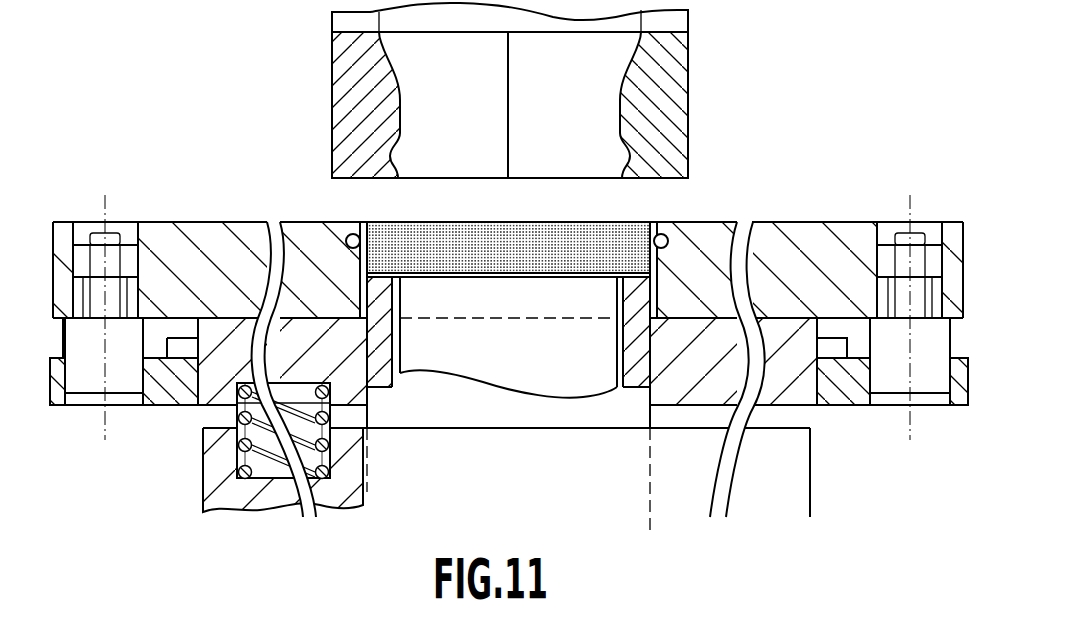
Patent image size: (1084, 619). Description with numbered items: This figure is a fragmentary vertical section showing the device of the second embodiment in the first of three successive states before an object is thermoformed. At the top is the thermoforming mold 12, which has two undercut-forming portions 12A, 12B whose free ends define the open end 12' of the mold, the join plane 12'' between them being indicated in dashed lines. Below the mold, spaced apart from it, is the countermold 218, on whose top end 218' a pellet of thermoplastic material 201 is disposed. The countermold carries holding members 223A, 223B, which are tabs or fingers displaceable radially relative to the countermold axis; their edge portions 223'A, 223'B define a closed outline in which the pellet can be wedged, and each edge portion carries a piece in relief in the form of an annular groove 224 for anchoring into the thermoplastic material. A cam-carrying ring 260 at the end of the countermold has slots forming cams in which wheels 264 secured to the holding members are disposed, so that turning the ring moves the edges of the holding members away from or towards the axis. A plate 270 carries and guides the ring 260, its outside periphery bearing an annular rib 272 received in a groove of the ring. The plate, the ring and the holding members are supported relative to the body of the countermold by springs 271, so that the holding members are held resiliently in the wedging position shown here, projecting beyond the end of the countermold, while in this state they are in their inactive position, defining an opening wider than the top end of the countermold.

The thermoforming mold 12 is at (556, 90).
The undercut-forming portion 12A is at (471, 96).
The undercut-forming portion 12B is at (589, 96).
The open end of the mold 12' is at (568, 186).
The join plane 12'' is at (541, 105).
The pellet of thermoplastic material 201 is at (468, 240).
The countermold 218 is at (506, 377).
The end of the countermold 218' is at (506, 331).
The holding member 223A is at (182, 232).
The holding member 223B is at (824, 232).
The edge portion 223'A is at (418, 332).
The edge portion 223'B is at (598, 332).
The annular groove 224 is at (324, 222).
The cam-carrying ring 260 is at (957, 398).
The wheel 264 is at (90, 378).
The plate 270 is at (690, 400).
The spring 271 is at (203, 447).
The annular rib 272 is at (842, 348).